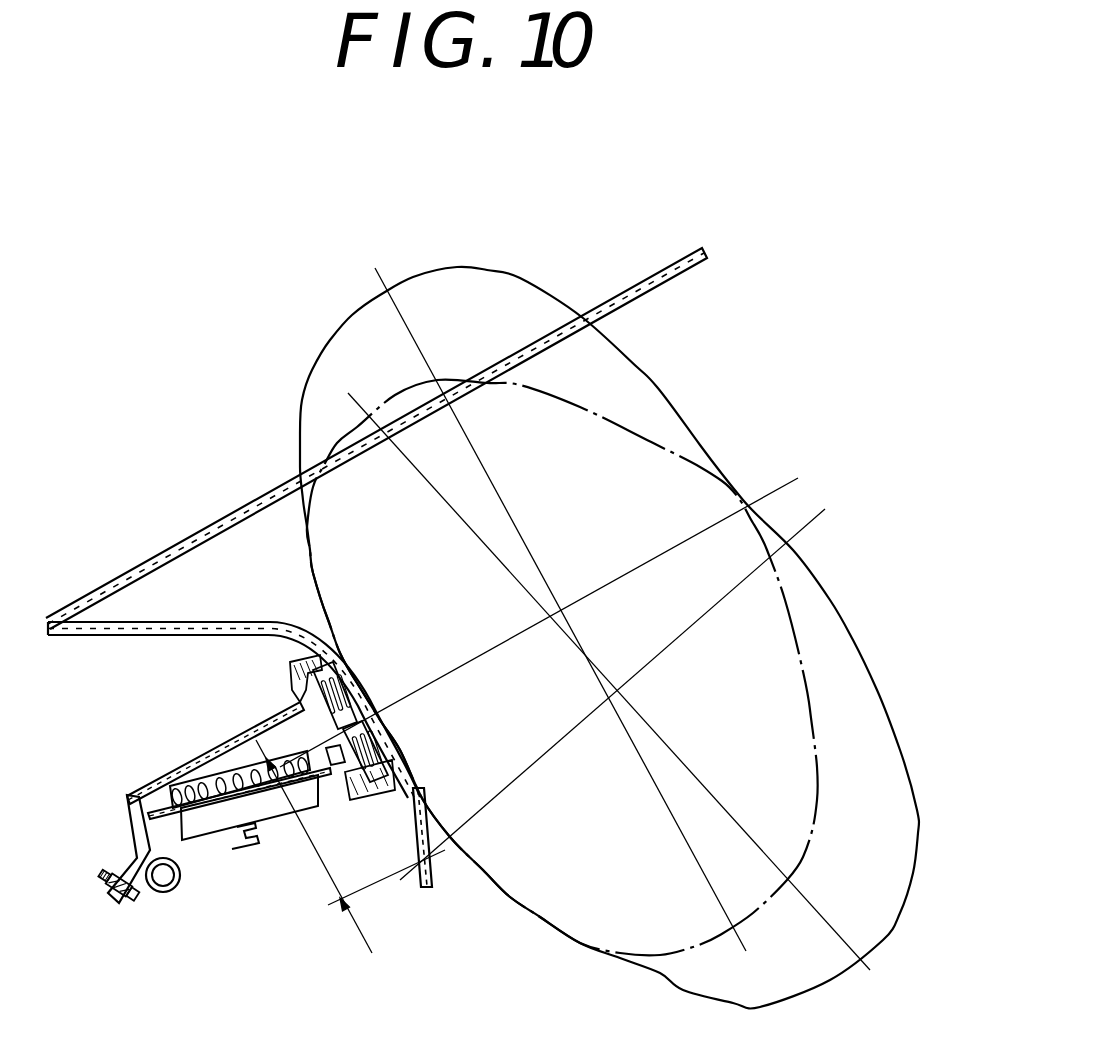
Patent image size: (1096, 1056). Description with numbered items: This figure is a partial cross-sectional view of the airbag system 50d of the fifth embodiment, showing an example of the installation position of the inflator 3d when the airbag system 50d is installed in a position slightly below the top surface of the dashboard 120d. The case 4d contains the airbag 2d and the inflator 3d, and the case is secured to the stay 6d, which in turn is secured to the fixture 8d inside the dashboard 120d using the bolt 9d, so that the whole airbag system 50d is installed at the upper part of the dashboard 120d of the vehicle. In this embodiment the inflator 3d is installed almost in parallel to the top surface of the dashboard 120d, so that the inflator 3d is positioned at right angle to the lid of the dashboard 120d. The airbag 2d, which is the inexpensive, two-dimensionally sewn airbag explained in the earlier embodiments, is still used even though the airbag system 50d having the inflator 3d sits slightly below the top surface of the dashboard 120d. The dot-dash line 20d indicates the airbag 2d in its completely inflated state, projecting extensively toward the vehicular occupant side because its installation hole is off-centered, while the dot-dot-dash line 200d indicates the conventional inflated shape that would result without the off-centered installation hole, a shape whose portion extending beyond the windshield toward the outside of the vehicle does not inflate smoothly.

The airbag 2d is at (290, 707).
The inflator 3d is at (272, 808).
The case 4d is at (200, 757).
The stay 6d is at (135, 837).
The fixture 8d is at (173, 888).
The bolt 9d is at (137, 903).
The dot-dash line 20d is at (850, 616).
The airbag system 50d is at (270, 951).
The dashboard 120d is at (437, 888).
The dot-dot-dash line 200d is at (640, 362).